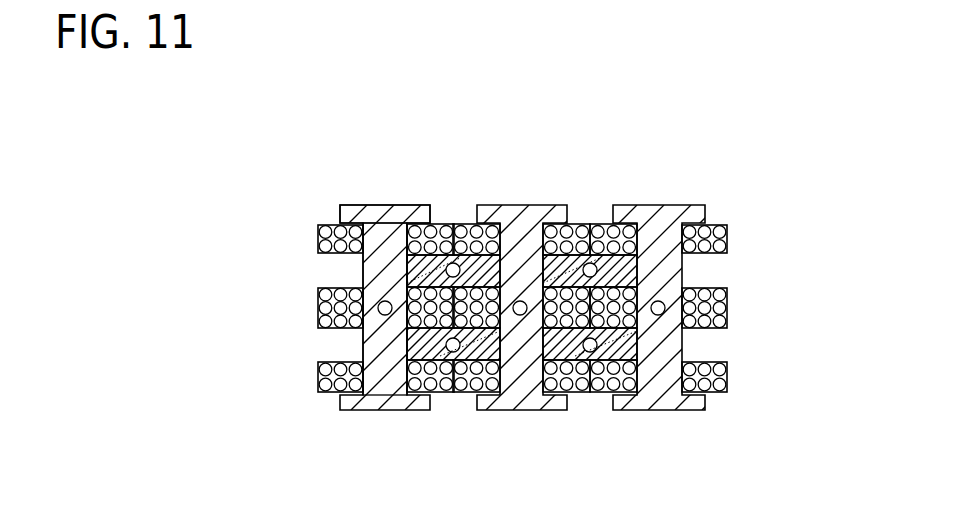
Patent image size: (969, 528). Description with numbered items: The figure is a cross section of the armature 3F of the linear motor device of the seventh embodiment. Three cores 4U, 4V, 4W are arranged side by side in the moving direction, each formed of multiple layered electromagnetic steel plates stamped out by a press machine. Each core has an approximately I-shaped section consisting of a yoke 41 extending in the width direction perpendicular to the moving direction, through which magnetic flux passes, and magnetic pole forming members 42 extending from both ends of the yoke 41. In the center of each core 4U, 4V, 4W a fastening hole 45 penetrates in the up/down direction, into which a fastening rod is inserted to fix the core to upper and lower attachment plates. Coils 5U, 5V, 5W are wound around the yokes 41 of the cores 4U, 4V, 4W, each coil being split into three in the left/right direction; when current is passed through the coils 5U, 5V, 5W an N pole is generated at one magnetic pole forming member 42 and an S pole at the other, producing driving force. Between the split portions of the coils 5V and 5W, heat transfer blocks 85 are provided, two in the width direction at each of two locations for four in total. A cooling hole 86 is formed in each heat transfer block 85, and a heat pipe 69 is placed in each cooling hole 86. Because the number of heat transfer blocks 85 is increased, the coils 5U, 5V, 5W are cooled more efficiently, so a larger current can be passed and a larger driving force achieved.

The armature 3F is at (753, 183).
The core 4U is at (386, 410).
The core 4V is at (517, 410).
The core 4W is at (656, 410).
The coil 5U is at (318, 376).
The coil 5V is at (456, 395).
The coil 5W is at (603, 395).
The yoke 41 is at (376, 272).
The magnetic pole forming member 42 is at (340, 212).
The fastening hole 45 is at (386, 300).
The heat transfer block 85 is at (500, 268).
The cooling hole 86 is at (518, 290).
The heat pipe 69 is at (522, 307).